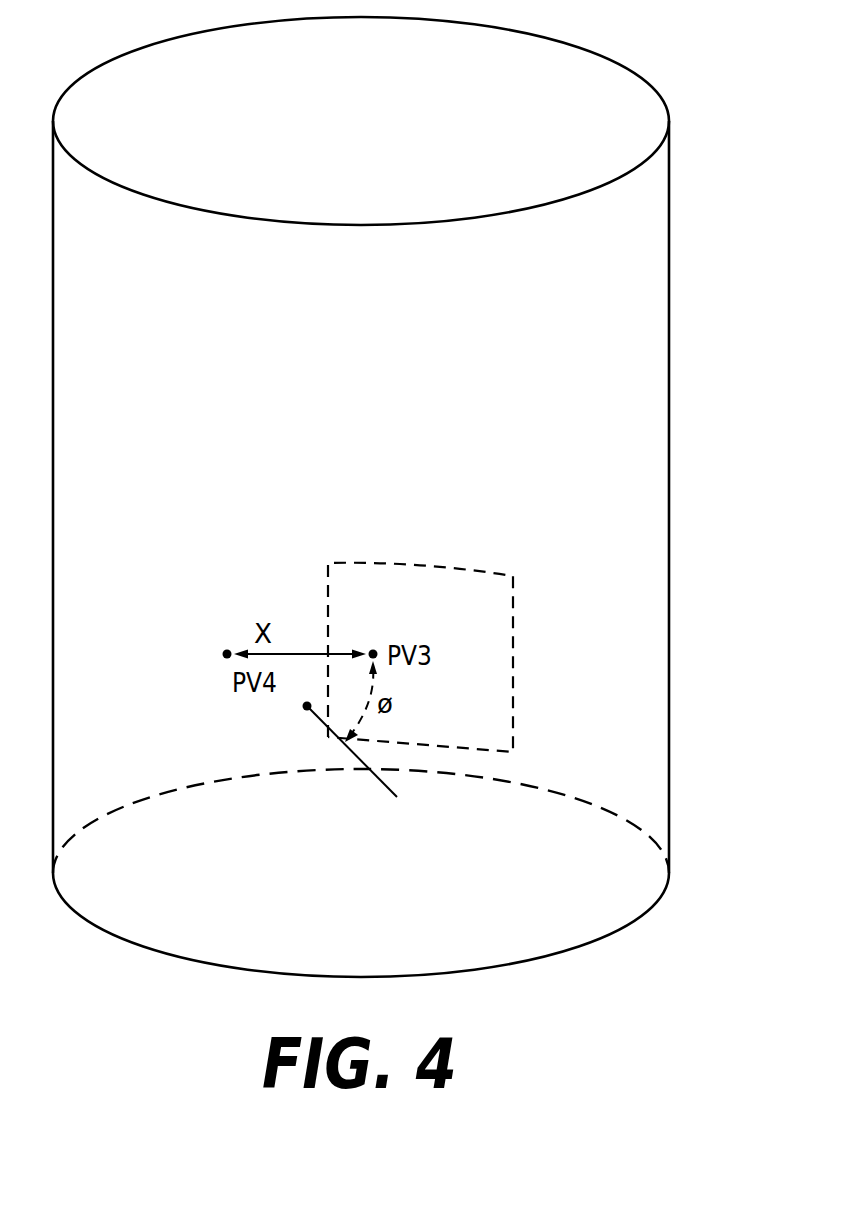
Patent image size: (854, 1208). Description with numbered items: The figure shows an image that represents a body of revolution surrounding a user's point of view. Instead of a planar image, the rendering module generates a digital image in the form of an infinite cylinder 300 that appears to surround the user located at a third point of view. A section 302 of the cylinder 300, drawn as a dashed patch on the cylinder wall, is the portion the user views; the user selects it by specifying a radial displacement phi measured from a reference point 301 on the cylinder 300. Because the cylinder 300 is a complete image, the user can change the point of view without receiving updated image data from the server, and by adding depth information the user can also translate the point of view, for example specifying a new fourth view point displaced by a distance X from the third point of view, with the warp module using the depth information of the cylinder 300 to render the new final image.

The cylinder 300 is at (641, 237).
The reference point 301 is at (307, 706).
The section 302 is at (437, 633).